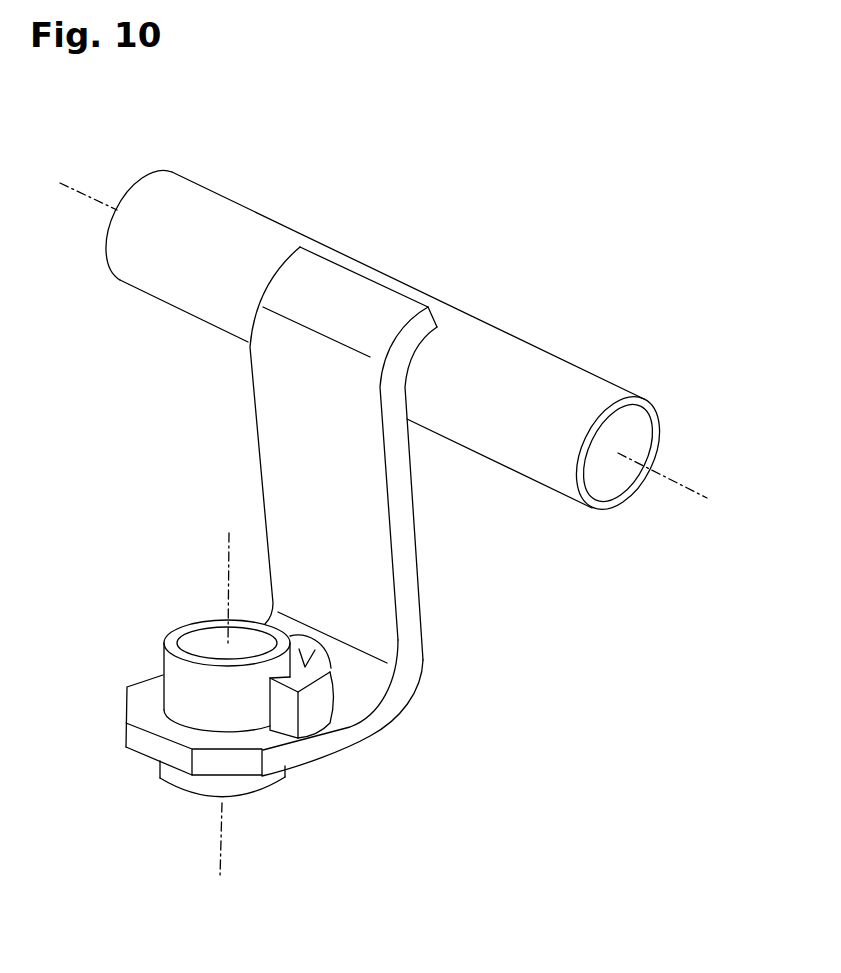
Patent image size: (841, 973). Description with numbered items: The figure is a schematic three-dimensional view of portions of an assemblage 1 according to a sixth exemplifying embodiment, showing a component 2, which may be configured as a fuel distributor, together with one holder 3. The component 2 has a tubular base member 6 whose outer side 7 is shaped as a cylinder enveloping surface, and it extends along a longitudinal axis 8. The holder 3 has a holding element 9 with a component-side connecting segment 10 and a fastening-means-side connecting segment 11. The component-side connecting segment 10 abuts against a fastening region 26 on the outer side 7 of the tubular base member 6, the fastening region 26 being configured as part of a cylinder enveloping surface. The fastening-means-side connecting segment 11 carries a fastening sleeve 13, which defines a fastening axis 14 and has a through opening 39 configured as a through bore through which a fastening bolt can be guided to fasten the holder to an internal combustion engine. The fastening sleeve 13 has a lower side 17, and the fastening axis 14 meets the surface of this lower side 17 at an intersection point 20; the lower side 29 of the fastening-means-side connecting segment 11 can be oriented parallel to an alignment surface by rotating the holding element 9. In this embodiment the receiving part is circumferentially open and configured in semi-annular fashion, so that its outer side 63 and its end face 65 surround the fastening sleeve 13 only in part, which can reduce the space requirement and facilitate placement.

The assemblage 1 is at (622, 253).
The component 2 is at (398, 311).
The tubular base member 6 is at (583, 387).
The outer side 7 is at (234, 203).
The longitudinal axis 8 is at (684, 483).
The holding element 9 is at (373, 537).
The component-side connecting segment 10 is at (332, 285).
The fastening region 26 is at (385, 277).
The fastening-means-side connecting segment 11 is at (352, 729).
The lower side of fastening-means-side connecting segment 29 is at (328, 768).
The holder 3 is at (337, 871).
The fastening sleeve 13 is at (174, 685).
The through opening 39 is at (197, 640).
The fastening axis 14 is at (222, 850).
The outer side of receiving part 63 is at (342, 694).
The end face 65 is at (336, 638).
The lower side of fastening sleeve 17 is at (263, 804).
The intersection point 20 is at (221, 803).